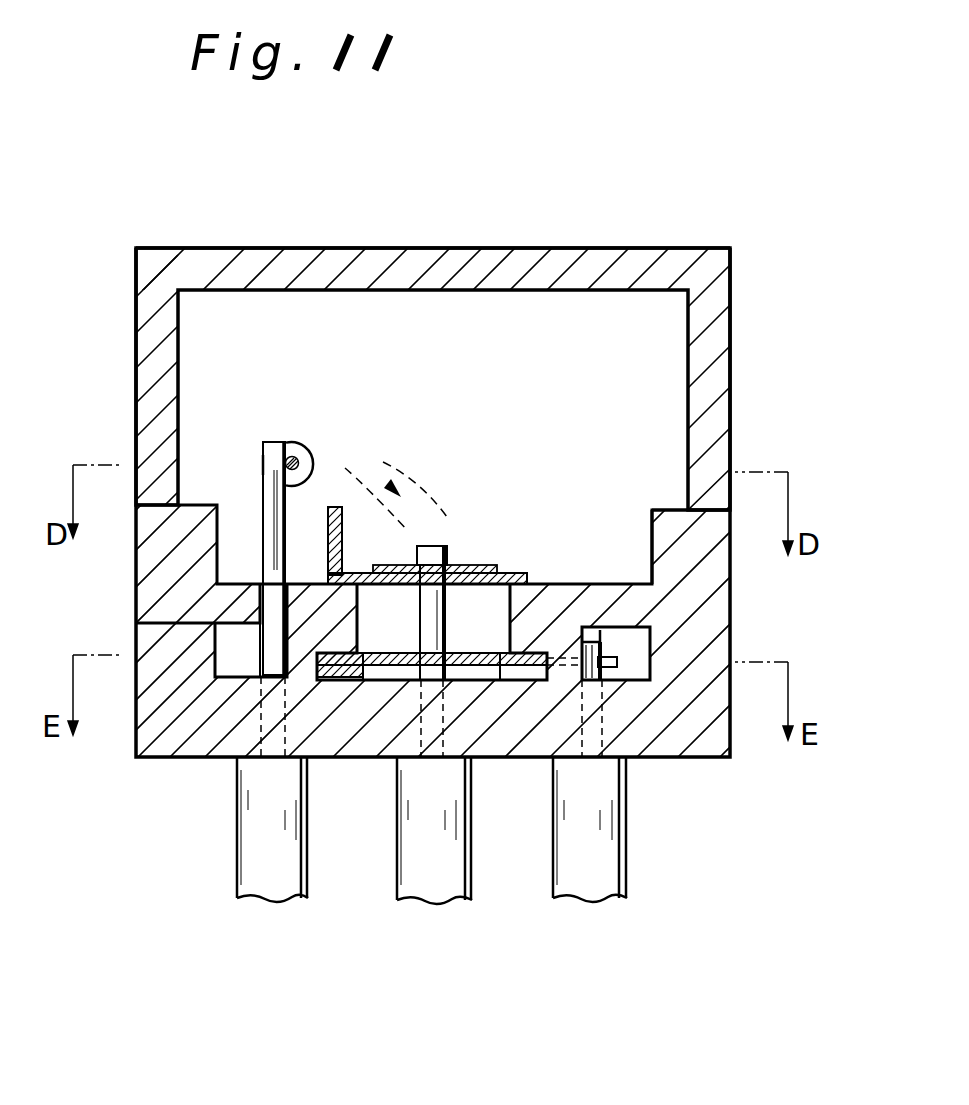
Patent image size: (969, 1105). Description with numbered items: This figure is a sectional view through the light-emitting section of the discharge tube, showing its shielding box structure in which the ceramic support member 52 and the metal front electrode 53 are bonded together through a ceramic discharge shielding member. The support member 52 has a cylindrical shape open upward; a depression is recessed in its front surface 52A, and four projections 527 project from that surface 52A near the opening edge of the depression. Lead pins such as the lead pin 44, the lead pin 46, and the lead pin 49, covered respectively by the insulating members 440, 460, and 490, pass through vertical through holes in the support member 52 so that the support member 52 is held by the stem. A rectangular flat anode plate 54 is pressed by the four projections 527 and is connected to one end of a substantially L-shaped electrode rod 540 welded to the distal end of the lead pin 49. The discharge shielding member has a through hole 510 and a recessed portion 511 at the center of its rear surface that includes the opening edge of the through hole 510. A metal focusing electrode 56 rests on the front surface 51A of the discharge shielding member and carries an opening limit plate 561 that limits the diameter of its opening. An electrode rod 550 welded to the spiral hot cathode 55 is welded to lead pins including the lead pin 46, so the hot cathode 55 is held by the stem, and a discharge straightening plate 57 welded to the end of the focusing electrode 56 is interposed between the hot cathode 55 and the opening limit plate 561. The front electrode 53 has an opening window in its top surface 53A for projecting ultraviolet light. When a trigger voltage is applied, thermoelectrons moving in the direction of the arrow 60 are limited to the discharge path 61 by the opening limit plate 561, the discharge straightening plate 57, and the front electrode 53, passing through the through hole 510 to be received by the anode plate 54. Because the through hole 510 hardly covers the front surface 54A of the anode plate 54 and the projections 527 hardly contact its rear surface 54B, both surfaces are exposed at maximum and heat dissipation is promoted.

The lead pin 44 is at (442, 544).
The lead pin 46 is at (328, 560).
The lead pin 49 is at (613, 670).
The front surface of the discharge shielding member 51A is at (557, 553).
The support member 52 is at (700, 747).
The front surface of the support member 52A is at (238, 664).
The front electrode 53 is at (698, 273).
The top surface of the front electrode 53A is at (535, 232).
The anode plate 54 is at (493, 682).
The front surface of the anode plate 54A is at (381, 632).
The rear surface of the anode plate 54B is at (373, 688).
The hot cathode 55 is at (302, 445).
The focusing electrode 56 is at (500, 572).
The discharge straightening plate 57 is at (345, 584).
The arrow 60 is at (343, 458).
The discharge path 61 is at (377, 453).
The insulating member 440 is at (428, 875).
The insulating member 460 is at (270, 878).
The insulating member 490 is at (593, 880).
The through hole 510 is at (482, 603).
The recessed portion 511 is at (290, 690).
The projection 527 is at (332, 683).
The electrode rod 540 is at (607, 647).
The electrode rod 550 is at (262, 465).
The opening limit plate 561 is at (488, 565).